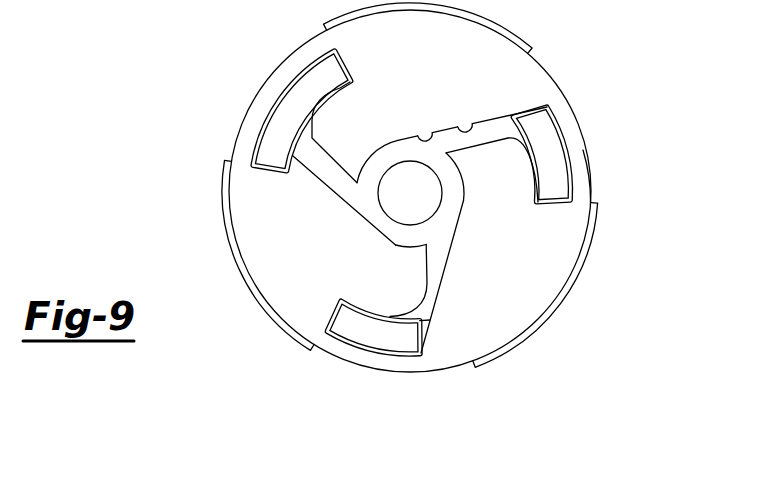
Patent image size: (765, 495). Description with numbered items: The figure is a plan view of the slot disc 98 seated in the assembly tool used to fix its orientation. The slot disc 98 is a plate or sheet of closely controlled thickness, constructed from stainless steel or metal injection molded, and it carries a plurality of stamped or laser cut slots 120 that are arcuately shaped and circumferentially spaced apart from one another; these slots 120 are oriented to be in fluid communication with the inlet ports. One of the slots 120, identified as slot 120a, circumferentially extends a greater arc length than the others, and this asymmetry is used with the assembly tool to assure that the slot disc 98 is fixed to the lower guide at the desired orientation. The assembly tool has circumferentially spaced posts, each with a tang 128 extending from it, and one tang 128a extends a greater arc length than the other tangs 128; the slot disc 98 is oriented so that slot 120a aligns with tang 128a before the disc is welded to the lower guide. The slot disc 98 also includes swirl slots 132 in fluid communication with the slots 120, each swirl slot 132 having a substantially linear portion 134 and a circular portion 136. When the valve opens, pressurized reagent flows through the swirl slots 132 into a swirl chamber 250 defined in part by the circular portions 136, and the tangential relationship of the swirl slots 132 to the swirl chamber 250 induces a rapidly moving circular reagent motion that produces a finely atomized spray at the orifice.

The slot disc 98 is at (206, 227).
The slots 120 is at (568, 170).
The slot 120a is at (335, 74).
The tangs 128 is at (545, 134).
The tang 128a is at (272, 140).
The swirl slots 132 is at (465, 130).
The substantially linear portion 134 is at (426, 141).
The circular portion 136 is at (365, 160).
The swirl chamber 250 is at (450, 208).